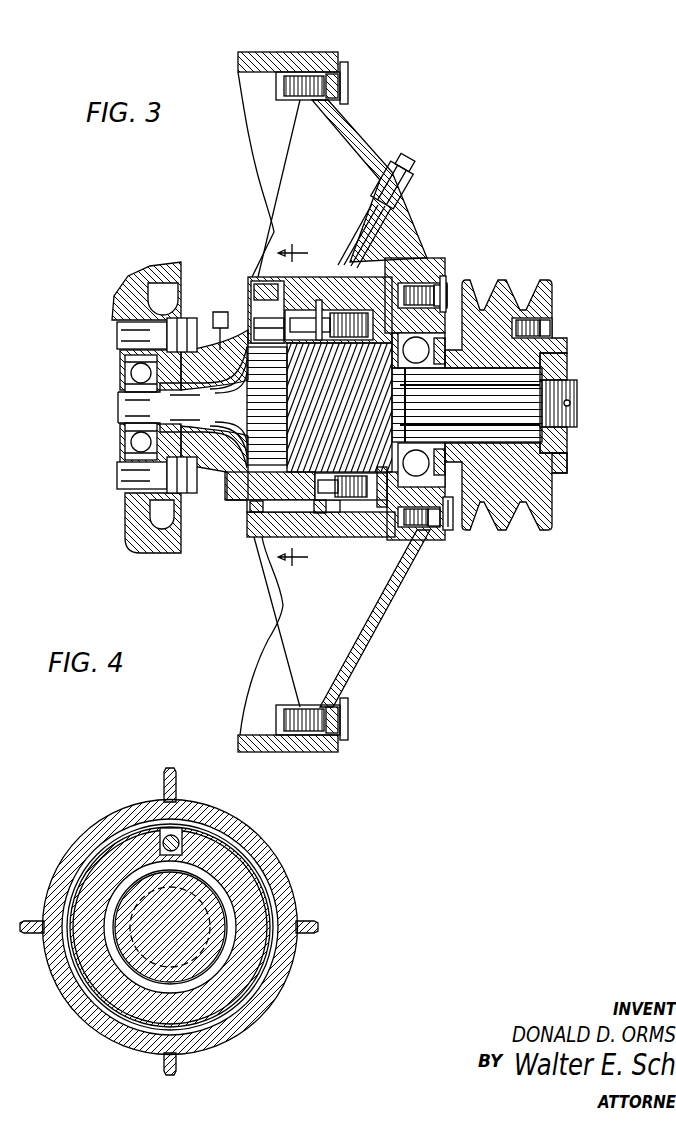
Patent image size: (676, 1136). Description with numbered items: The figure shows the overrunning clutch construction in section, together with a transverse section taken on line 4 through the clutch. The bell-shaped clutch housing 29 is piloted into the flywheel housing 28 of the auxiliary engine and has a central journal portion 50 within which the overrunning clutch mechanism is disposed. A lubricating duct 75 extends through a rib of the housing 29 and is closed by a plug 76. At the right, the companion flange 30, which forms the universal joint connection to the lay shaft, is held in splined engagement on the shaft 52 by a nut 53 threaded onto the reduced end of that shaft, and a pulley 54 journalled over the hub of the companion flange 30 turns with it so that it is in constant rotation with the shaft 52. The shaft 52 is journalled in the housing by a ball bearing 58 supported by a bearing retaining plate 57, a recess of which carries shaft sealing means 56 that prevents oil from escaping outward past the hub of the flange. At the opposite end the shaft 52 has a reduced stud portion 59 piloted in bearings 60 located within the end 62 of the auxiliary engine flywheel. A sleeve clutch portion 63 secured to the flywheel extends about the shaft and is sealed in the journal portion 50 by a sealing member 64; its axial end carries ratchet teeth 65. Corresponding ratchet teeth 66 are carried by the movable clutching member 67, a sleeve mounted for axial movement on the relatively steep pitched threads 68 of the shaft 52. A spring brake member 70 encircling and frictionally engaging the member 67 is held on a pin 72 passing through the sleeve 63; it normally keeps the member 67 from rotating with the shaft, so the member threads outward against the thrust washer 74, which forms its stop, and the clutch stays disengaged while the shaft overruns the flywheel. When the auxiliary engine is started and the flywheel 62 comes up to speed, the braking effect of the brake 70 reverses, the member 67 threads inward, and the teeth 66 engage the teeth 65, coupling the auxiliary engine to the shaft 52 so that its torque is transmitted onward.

In FIG. 3, the flywheel housing 28 is at (270, 53).
In FIG. 3, the clutch housing 29 is at (356, 170).
In FIG. 3, the lubricating duct 75 is at (355, 235).
In FIG. 3, the plug 76 is at (418, 193).
In FIG. 3, the section line 4— 4 is at (293, 406).
In FIG. 3, the spring brake member 70 is at (318, 300).
In FIG. 4, the spring brake member 70 is at (143, 837).
In FIG. 3, the movable clutching member 67 is at (400, 262).
In FIG. 4, the movable clutching member 67 is at (227, 913).
In FIG. 3, the ball bearing 58 is at (450, 282).
In FIG. 3, the steep pitched threads 68 is at (255, 330).
In FIG. 4, the steep pitched threads 68 is at (87, 880).
In FIG. 3, the pin 72 is at (250, 322).
In FIG. 4, the pin 72 is at (177, 833).
In FIG. 3, the companion flange 30 is at (568, 344).
In FIG. 3, the nut 53 is at (563, 368).
In FIG. 3, the flywheel end 62 is at (119, 346).
In FIG. 3, the bearings 60 is at (131, 375).
In FIG. 3, the reduced stud portion 59 is at (128, 416).
In FIG. 3, the sleeve clutch portion 63 is at (224, 458).
In FIG. 4, the sleeve clutch portion 63 is at (200, 850).
In FIG. 3, the sealing member 64 is at (249, 514).
In FIG. 3, the central journal portion 50 is at (283, 532).
In FIG. 4, the central journal portion 50 is at (260, 855).
In FIG. 3, the ratchet teeth 65 is at (320, 514).
In FIG. 3, the ratchet teeth 66 is at (330, 498).
In FIG. 3, the thrust washer 74 is at (384, 508).
In FIG. 3, the bearing retaining plate 57 is at (431, 528).
In FIG. 3, the shaft sealing means 56 is at (454, 531).
In FIG. 3, the shaft 52 is at (517, 503).
In FIG. 3, the pulley 54 is at (555, 494).